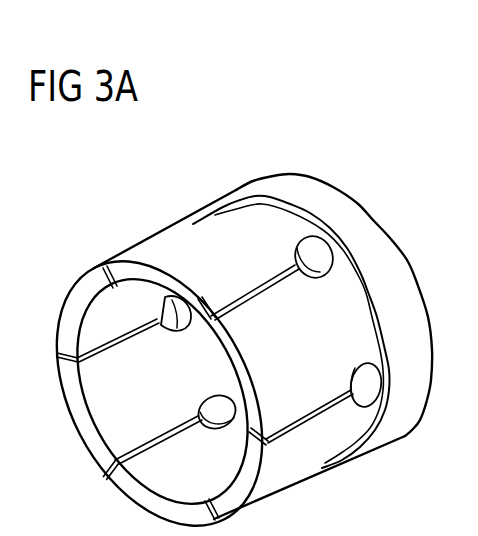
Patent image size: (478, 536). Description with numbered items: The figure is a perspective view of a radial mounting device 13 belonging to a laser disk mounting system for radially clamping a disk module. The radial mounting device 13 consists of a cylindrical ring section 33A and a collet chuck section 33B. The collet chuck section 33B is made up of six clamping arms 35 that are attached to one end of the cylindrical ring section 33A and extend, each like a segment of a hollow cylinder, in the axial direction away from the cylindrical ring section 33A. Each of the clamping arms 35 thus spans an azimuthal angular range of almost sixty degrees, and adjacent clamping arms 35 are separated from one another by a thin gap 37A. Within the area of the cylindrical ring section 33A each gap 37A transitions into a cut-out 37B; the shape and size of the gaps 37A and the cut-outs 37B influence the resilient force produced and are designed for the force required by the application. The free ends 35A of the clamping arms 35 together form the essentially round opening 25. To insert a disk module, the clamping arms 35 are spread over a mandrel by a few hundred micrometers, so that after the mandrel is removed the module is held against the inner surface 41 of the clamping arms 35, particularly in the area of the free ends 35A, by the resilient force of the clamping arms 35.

The radial mounting device 13 is at (145, 235).
The cylindrical ring section 33A is at (356, 187).
The collet chuck section 33B is at (112, 245).
The clamping arms 35 is at (267, 335).
The free ends 35A is at (284, 394).
The gap 37A is at (234, 302).
The cut-outs 37B is at (317, 280).
The inner surface 41 is at (104, 380).
The opening 25 is at (122, 430).